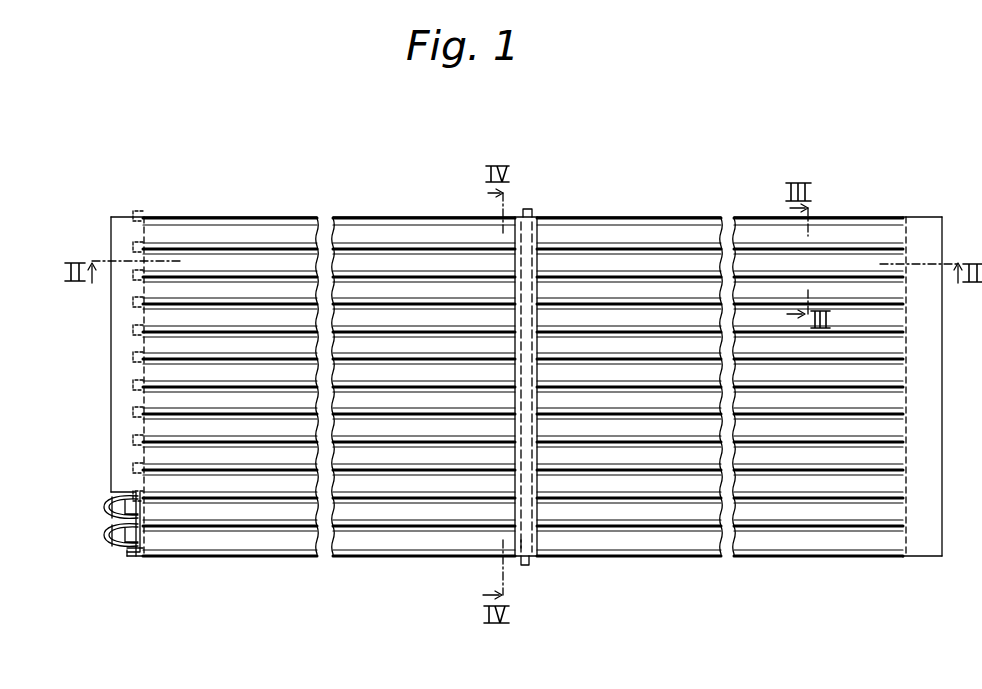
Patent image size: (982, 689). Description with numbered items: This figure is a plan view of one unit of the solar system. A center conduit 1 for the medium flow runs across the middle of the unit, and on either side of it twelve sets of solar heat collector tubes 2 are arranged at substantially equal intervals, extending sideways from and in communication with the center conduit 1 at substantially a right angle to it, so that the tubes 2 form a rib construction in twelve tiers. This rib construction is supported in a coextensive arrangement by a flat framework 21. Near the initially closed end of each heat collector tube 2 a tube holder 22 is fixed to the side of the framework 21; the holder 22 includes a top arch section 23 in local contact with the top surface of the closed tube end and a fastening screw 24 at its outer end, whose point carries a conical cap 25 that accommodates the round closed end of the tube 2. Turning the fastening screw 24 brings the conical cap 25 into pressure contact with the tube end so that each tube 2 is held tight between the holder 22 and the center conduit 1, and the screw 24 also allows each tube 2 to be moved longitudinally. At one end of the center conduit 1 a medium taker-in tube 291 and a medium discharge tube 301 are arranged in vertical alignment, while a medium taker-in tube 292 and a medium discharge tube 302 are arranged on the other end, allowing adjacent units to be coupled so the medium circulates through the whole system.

The center conduit 1 is at (526, 278).
The solar heat collector tube 2 is at (368, 288).
The framework 21 is at (243, 562).
The tube holder 22 is at (118, 553).
The top arch section 23 is at (148, 560).
The fastening screw 24 is at (112, 508).
The conical cap 25 is at (122, 495).
The medium taker-in tube 291 is at (527, 209).
The medium discharge tube 301 is at (587, 356).
The medium taker-in tube 292 is at (527, 565).
The medium discharge tube 302 is at (587, 575).